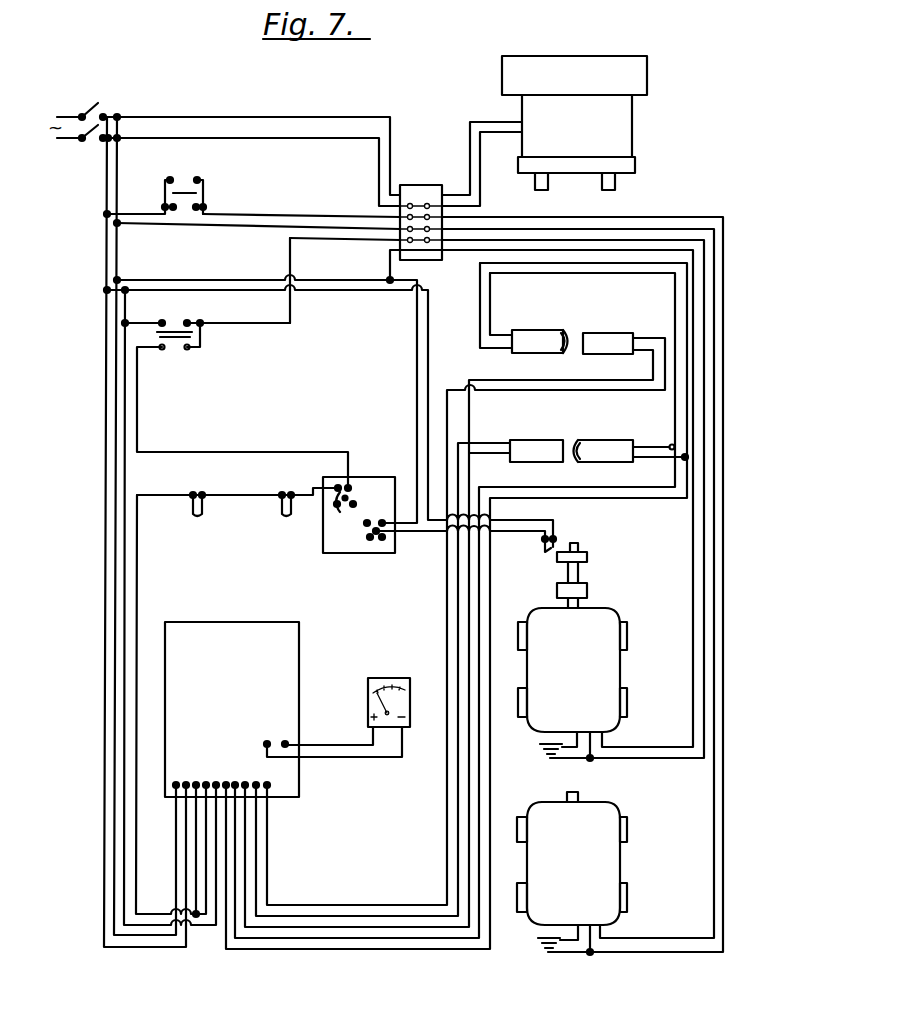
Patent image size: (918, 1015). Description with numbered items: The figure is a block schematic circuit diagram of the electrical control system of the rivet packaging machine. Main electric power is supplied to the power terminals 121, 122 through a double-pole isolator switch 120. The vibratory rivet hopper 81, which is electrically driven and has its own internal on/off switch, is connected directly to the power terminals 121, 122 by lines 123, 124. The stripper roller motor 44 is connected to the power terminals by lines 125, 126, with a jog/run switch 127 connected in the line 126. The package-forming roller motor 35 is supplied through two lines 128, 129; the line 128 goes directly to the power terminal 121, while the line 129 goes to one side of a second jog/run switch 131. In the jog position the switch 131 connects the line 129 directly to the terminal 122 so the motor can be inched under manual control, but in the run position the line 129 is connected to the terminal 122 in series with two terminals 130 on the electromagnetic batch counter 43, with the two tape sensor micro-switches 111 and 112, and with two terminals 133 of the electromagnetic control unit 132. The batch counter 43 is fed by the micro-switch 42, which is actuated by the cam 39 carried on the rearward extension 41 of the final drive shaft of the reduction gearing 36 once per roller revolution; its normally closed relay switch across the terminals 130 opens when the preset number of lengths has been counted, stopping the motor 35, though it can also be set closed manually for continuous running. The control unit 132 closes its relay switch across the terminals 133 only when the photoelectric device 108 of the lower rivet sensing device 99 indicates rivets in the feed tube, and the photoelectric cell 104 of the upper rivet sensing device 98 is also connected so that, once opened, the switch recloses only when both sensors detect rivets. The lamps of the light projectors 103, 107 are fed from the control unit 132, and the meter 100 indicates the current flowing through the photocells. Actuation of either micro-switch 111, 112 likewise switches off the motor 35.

The double-pole isolator switch 120 is at (88, 102).
The power terminal 121 is at (107, 112).
The power terminal 122 is at (101, 141).
The line 123 is at (392, 148).
The line 124 is at (380, 177).
The line 125 is at (262, 230).
The line 126 is at (287, 217).
The jog/run switch 127 is at (205, 198).
The line 128 is at (704, 618).
The line 129 is at (277, 325).
The terminals 130 is at (377, 467).
The jog/run switch 131 is at (205, 342).
The electromagnetic control unit 132 is at (260, 764).
The terminals 133 is at (191, 778).
The vibratory rivet hopper 81 is at (630, 148).
The upper rivet sensing device 98 is at (456, 606).
The lower rivet sensing device 99 is at (466, 632).
The meter 100 is at (368, 705).
The light projector 103 is at (535, 322).
The photoelectric cell 104 is at (620, 322).
The light projector 107 is at (620, 432).
The photoelectric device 108 is at (528, 432).
The tape sensor micro-switch 111 is at (280, 512).
The tape sensor micro-switch 112 is at (191, 512).
The electromagnetic batch counter 43 is at (359, 500).
The micro-switch 42 is at (547, 550).
The cam 39 is at (587, 553).
The rearward extension 41 is at (578, 573).
The reduction gearing 36 is at (585, 592).
The package-forming roller motor 35 is at (617, 680).
The stripper roller motor 44 is at (613, 872).